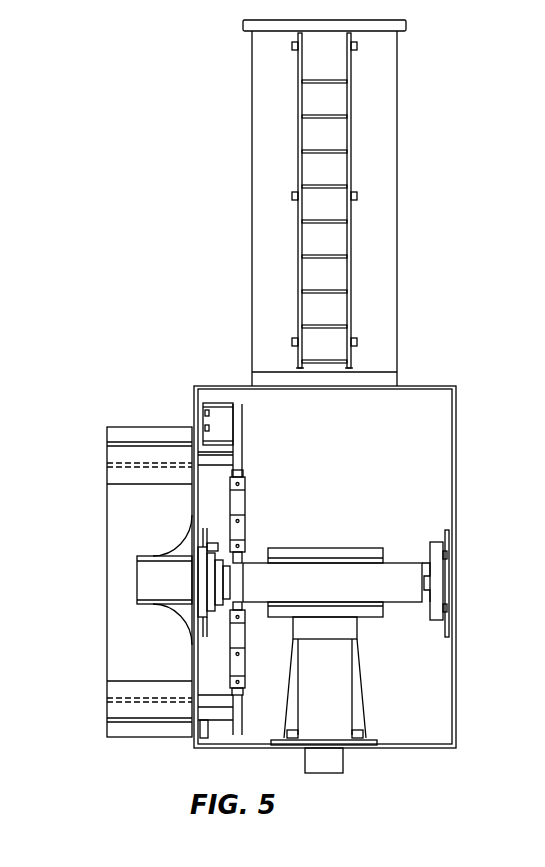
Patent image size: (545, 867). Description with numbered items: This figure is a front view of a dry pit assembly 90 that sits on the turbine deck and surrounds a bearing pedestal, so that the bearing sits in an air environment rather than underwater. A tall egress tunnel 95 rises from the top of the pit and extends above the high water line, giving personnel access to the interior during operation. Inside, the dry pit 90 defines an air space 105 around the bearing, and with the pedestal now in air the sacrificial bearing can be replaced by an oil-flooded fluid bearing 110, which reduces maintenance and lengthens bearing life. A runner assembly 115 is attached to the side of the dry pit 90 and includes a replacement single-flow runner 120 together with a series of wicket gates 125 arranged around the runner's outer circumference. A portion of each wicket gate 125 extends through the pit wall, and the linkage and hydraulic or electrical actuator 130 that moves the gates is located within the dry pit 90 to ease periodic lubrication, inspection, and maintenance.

The dry pit assembly 90 is at (427, 348).
The egress tunnel 95 is at (397, 131).
The air space 105 is at (418, 449).
The fluid bearing 110 is at (314, 553).
The runner assembly 115 is at (147, 421).
The replacement runner 120 is at (133, 500).
The wicket gate 125 is at (138, 708).
The actuator 130 is at (238, 503).